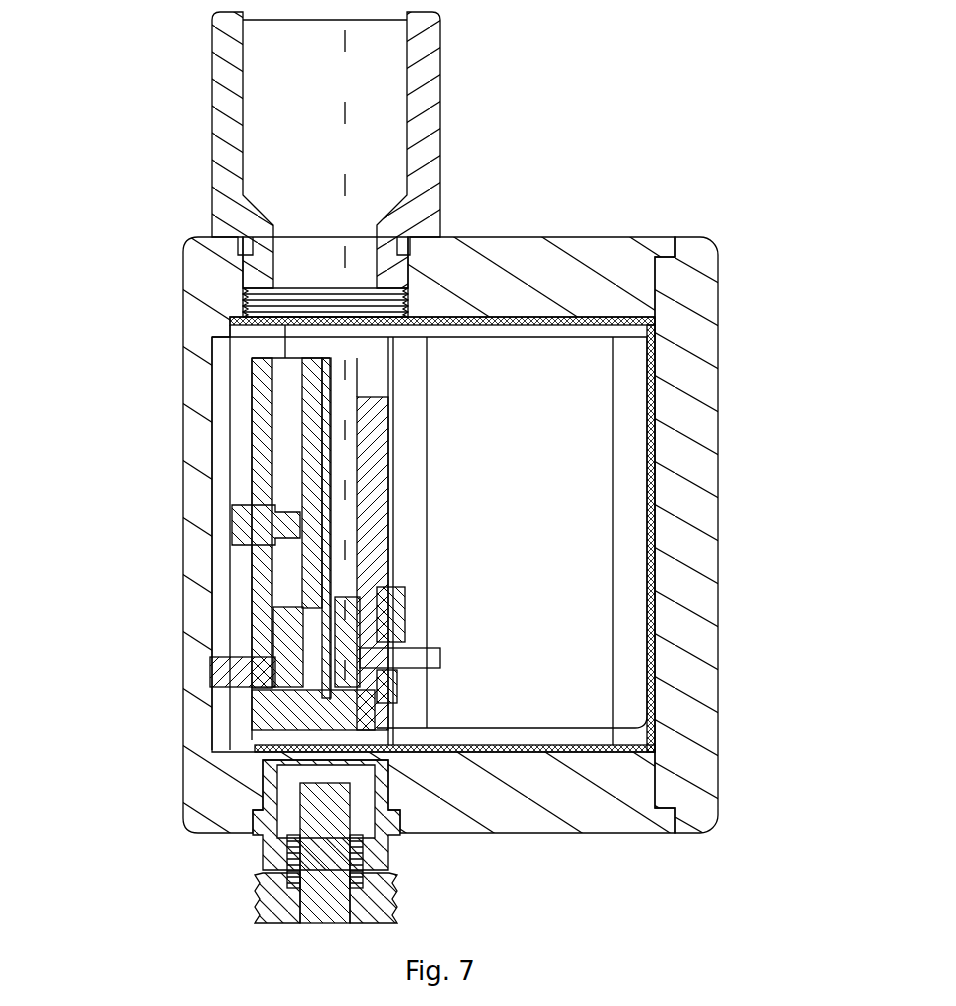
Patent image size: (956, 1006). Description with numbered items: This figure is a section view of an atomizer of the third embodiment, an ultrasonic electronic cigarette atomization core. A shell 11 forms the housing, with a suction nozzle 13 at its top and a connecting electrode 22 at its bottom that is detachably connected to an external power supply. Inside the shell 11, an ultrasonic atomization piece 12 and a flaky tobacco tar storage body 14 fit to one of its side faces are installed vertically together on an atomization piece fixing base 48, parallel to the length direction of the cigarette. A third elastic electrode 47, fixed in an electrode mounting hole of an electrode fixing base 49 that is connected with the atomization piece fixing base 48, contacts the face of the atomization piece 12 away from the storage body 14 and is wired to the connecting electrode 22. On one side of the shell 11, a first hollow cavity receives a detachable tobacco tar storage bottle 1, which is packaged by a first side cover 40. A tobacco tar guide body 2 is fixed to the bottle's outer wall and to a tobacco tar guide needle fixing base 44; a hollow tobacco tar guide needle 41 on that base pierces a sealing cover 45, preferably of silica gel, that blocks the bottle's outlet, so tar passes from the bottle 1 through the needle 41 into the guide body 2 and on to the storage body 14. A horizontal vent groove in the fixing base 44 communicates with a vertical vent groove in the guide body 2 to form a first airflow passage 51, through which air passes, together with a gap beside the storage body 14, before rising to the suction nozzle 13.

The tobacco tar storage bottle 1 is at (655, 528).
The tobacco tar guide body 2 is at (270, 652).
The shell 11 is at (575, 262).
The ultrasonic atomization piece 12 is at (300, 430).
The suction nozzle 13 is at (228, 88).
The flaky tobacco tar storage body 14 is at (305, 452).
The connecting electrode 22 is at (318, 903).
The first side cover 40 is at (700, 355).
The tobacco tar guide needle 41 is at (437, 649).
The tobacco tar guide needle fixing base 44 is at (390, 512).
The sealing cover 45 is at (405, 606).
The third elastic electrode 47 is at (253, 528).
The atomization piece fixing base 48 is at (255, 627).
The electrode fixing base 49 is at (262, 378).
The first airflow passage 51 is at (285, 697).